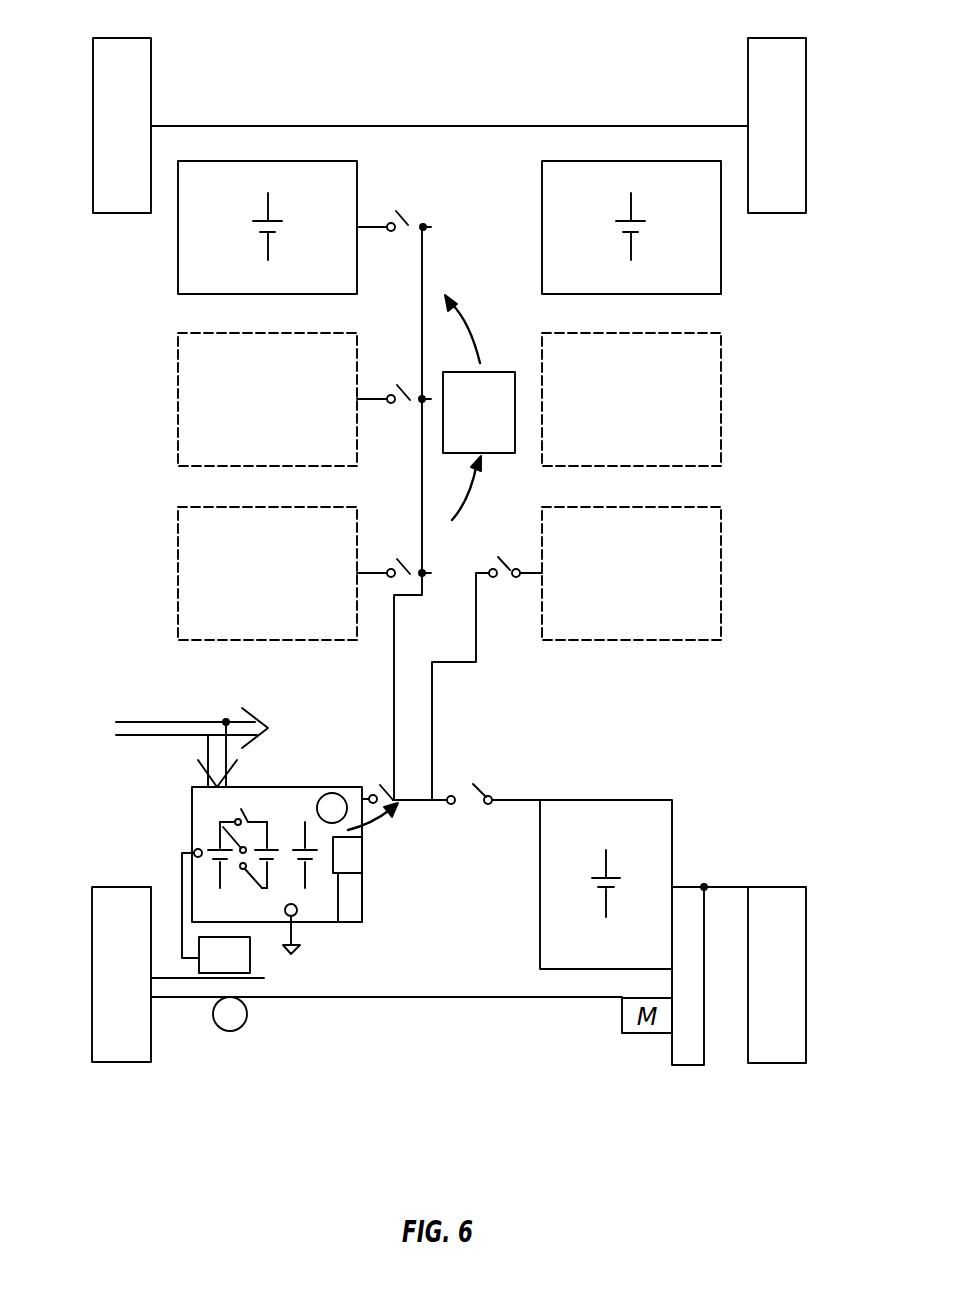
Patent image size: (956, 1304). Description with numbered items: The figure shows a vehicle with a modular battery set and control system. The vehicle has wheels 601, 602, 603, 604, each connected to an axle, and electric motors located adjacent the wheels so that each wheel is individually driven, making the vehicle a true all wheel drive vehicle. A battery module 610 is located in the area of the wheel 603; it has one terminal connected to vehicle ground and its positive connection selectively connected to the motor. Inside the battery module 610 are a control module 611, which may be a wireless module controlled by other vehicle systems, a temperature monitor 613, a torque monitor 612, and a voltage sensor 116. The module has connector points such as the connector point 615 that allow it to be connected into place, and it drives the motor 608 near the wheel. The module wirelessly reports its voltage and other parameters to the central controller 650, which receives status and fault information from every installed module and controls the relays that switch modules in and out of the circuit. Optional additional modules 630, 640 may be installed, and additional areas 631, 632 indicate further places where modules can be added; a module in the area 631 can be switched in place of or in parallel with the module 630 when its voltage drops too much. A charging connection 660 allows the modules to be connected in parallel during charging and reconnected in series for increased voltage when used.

The wheel 601 is at (107, 38).
The wheel 602 is at (785, 38).
The wheel 603 is at (121, 1062).
The wheel 604 is at (777, 1063).
The additional module 630 is at (322, 160).
The additional area 631 is at (323, 333).
The additional area 632 is at (323, 507).
The additional module 640 is at (570, 160).
The central controller 650 is at (493, 453).
The external power input 660 is at (137, 720).
The battery module 610 is at (277, 787).
The control module 611 is at (352, 853).
The temperature monitor 613 is at (352, 902).
The voltage sensor 116 is at (297, 912).
The connector point 615 is at (194, 850).
The motor 608 is at (250, 952).
The torque monitor 612 is at (230, 1031).